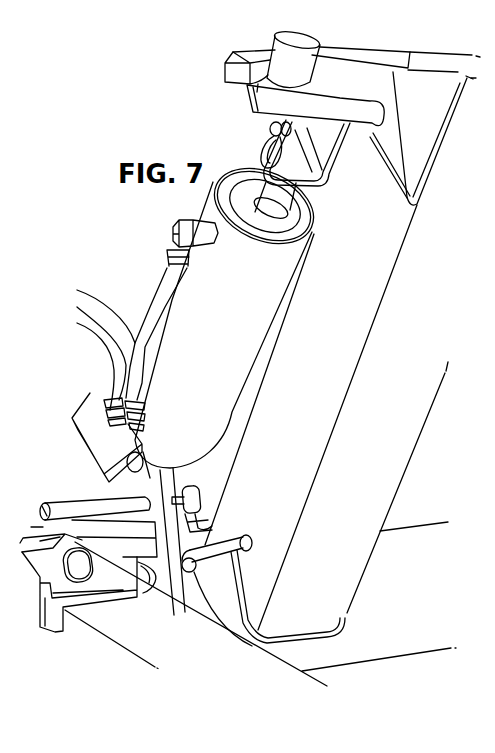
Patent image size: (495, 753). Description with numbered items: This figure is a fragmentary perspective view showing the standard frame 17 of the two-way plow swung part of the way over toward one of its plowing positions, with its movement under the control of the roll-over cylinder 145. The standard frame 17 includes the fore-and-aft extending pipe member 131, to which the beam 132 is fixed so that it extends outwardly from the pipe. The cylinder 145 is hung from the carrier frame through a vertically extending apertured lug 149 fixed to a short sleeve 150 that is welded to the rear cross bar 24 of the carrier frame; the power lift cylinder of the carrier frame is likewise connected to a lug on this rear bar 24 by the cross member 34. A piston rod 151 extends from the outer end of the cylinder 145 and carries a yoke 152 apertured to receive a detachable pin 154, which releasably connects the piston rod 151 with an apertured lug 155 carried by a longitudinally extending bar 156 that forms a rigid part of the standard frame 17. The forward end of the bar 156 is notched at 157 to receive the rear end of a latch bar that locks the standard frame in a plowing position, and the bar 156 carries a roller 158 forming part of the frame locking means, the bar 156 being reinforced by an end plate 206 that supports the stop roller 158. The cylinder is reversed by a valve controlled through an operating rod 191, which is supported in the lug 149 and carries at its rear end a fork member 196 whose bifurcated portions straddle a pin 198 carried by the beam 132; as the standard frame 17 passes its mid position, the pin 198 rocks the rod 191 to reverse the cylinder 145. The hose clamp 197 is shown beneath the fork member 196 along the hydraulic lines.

The standard frame 17 is at (445, 388).
The rear bar 24 is at (106, 622).
The cross member 34 is at (70, 566).
The pipe member 131 is at (416, 534).
The beam 132 is at (418, 424).
The roll-over cylinder 145 is at (234, 405).
The apertured lug 149 is at (167, 487).
The sleeve 150 is at (147, 585).
The piston rod 151 is at (260, 176).
The yoke 152 is at (317, 176).
The detachable pin 154 is at (270, 128).
The apertured lug 155 is at (333, 108).
The bar 156 is at (347, 62).
The notch 157 is at (224, 70).
The roller 158 is at (284, 45).
The operating rod 191 is at (68, 506).
The fork member 196 is at (203, 496).
The hose clamp 197 is at (200, 528).
The pin 198 is at (230, 556).
The end plate 206 is at (445, 55).